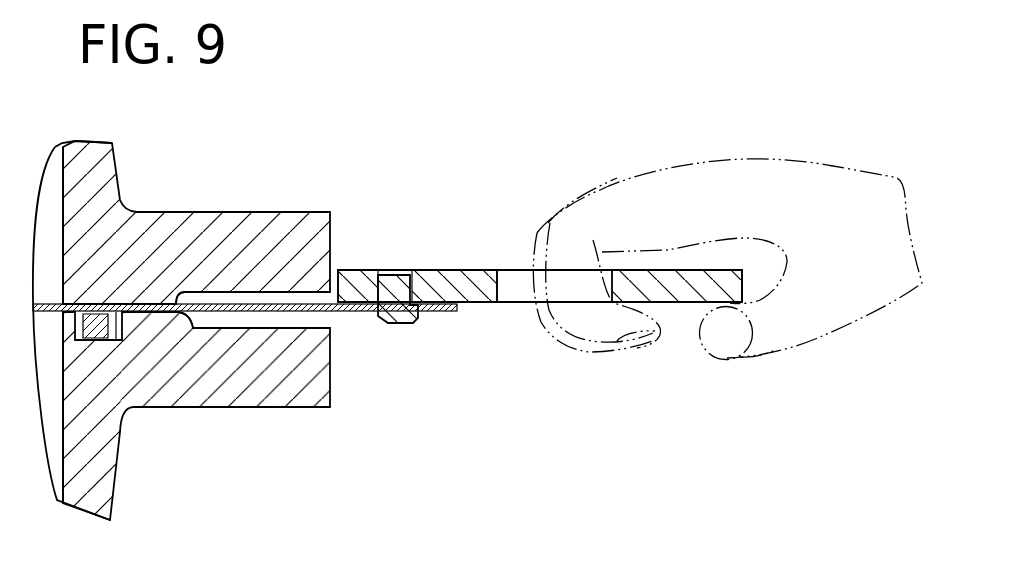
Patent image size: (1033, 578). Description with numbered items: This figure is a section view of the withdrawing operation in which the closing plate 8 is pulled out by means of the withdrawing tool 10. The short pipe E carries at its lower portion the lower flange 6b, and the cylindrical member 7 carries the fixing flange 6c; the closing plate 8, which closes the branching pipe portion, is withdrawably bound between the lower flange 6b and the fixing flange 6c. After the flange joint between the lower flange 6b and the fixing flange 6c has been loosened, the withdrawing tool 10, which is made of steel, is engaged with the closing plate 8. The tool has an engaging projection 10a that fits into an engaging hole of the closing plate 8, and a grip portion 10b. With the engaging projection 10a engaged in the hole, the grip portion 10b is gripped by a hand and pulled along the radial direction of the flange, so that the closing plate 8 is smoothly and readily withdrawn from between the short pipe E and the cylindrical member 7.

The lower flange 6b is at (330, 213).
The fixing flange 6c is at (303, 407).
The cylindrical member 7 is at (113, 455).
The closing plate 8 is at (230, 303).
The withdrawing tool 10 is at (464, 269).
The engaging projection 10a is at (400, 325).
The grip portion 10b is at (677, 304).
The short pipe E is at (293, 208).